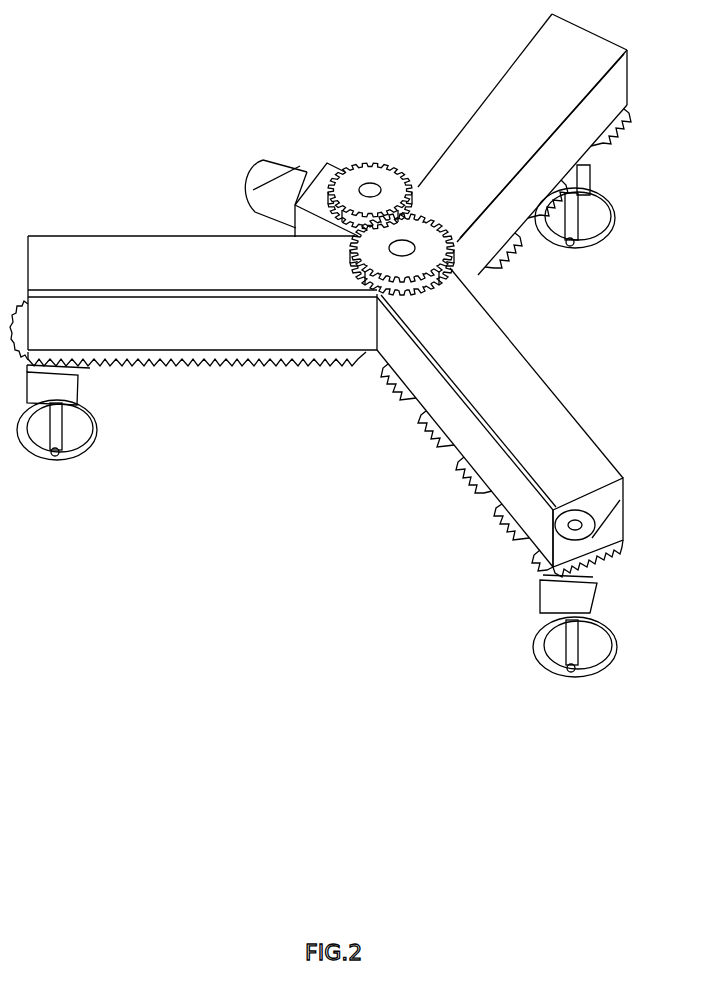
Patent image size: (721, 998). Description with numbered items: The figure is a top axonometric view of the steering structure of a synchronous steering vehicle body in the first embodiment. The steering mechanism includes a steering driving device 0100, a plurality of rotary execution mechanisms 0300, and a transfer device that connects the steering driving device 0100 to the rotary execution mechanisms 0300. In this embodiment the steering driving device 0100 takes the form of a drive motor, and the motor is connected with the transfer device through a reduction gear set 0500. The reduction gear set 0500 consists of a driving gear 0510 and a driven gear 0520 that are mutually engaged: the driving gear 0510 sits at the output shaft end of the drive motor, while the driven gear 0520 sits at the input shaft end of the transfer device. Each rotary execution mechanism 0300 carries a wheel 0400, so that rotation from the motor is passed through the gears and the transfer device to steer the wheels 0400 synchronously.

The steering driving device 0100 is at (292, 166).
The rotary execution mechanism 0300 is at (88, 370).
The wheel 0400 is at (78, 430).
The reduction gear set 0500 is at (372, 167).
The driving gear 0510 is at (390, 168).
The driven gear 0520 is at (437, 249).